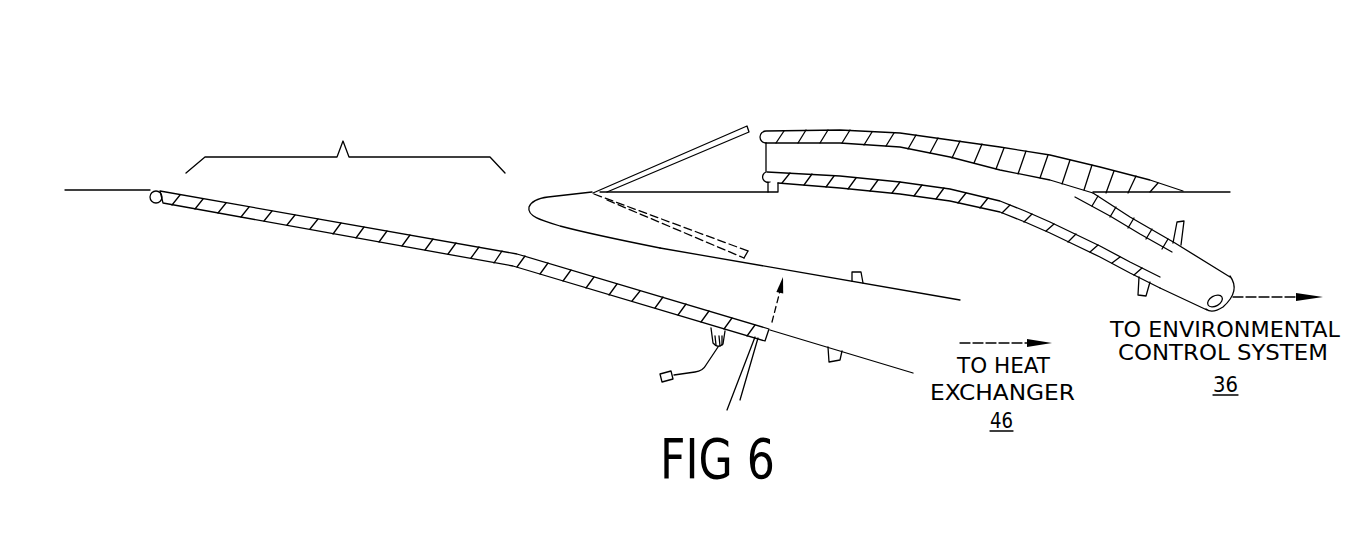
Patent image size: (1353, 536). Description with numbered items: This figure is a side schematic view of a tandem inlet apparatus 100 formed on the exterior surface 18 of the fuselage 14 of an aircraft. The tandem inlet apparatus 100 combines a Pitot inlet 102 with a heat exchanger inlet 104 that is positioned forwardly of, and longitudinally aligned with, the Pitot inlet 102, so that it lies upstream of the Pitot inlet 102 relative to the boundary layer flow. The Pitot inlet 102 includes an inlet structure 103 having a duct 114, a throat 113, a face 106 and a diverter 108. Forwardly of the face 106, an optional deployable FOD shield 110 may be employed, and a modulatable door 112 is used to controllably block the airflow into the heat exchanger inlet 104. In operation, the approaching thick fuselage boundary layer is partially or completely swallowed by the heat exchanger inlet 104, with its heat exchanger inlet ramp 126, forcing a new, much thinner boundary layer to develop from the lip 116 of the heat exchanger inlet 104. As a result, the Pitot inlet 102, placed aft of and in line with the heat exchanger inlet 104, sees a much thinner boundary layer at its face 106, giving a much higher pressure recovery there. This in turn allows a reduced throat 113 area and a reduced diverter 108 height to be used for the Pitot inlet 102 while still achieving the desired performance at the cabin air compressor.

The fuselage 14 is at (135, 173).
The exterior surface 18 is at (112, 190).
The tandem inlet apparatus 100 is at (455, 122).
The Pitot inlet 102 is at (938, 121).
The inlet structure 103 is at (873, 140).
The heat exchanger inlet 104 is at (345, 144).
The face 106 is at (764, 156).
The diverter 108 is at (788, 185).
The deployable FOD shield 110 is at (692, 148).
The modulatable door 112 is at (333, 233).
The throat 113 is at (776, 158).
The duct 114 is at (948, 170).
The lip 116 is at (533, 198).
The heat exchanger inlet ramp 126 is at (783, 330).